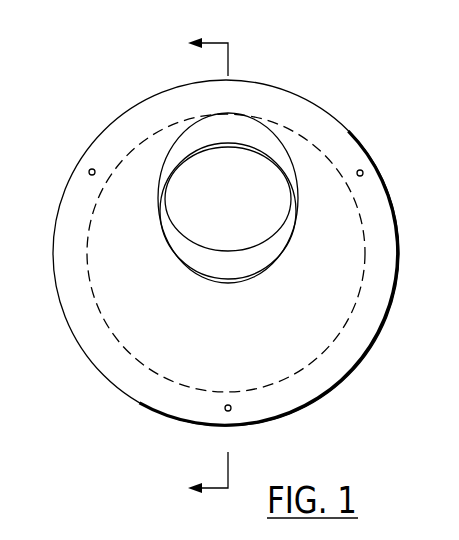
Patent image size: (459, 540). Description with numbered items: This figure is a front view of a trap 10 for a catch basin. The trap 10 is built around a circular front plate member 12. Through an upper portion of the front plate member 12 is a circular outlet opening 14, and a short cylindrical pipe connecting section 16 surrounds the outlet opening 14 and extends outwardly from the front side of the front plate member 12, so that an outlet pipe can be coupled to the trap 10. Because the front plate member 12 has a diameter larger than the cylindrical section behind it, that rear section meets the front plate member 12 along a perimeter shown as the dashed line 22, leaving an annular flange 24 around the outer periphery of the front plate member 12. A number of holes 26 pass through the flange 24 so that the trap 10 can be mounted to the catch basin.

The trap 10 is at (367, 101).
The front plate member 12 is at (399, 207).
The outlet opening 14 is at (239, 206).
The pipe connecting section 16 is at (257, 133).
The dashed line 22 is at (347, 330).
The annular flange 24 is at (306, 408).
The holes 26 is at (90, 170).